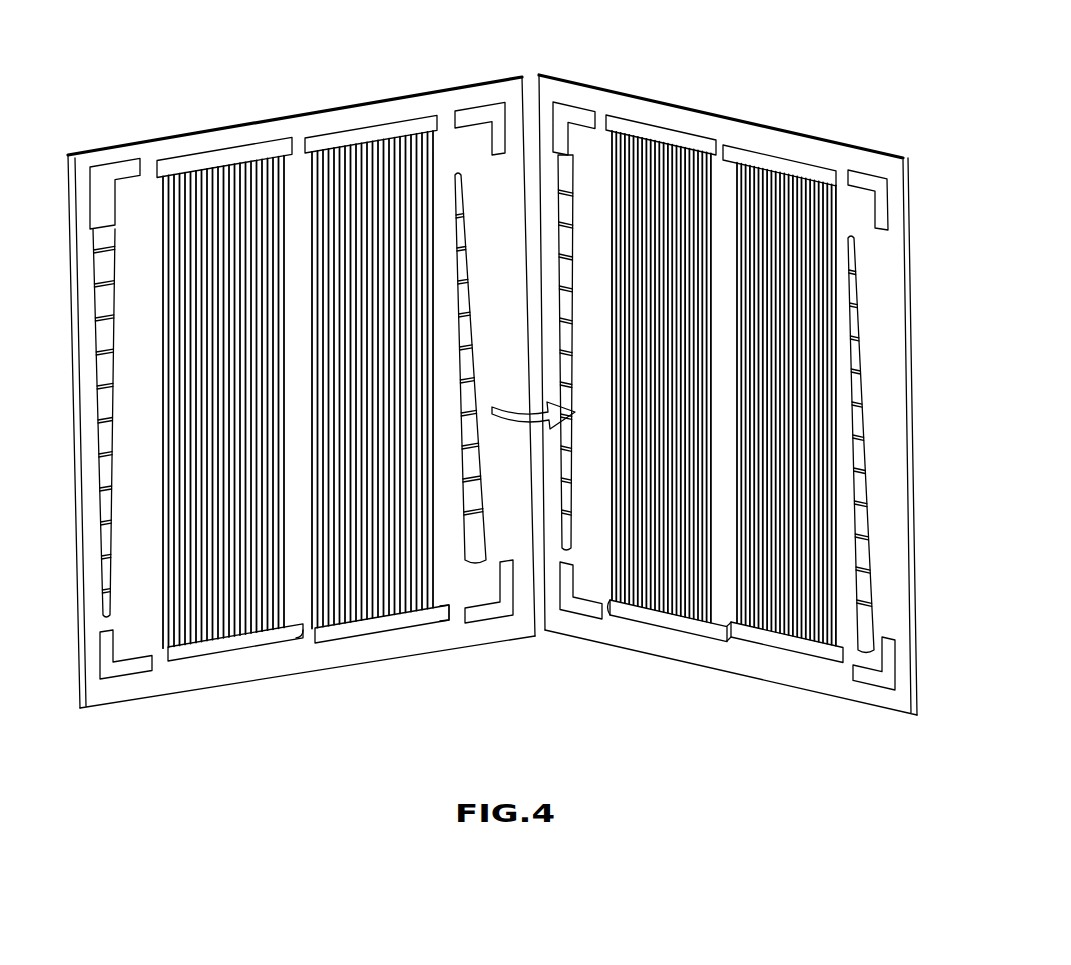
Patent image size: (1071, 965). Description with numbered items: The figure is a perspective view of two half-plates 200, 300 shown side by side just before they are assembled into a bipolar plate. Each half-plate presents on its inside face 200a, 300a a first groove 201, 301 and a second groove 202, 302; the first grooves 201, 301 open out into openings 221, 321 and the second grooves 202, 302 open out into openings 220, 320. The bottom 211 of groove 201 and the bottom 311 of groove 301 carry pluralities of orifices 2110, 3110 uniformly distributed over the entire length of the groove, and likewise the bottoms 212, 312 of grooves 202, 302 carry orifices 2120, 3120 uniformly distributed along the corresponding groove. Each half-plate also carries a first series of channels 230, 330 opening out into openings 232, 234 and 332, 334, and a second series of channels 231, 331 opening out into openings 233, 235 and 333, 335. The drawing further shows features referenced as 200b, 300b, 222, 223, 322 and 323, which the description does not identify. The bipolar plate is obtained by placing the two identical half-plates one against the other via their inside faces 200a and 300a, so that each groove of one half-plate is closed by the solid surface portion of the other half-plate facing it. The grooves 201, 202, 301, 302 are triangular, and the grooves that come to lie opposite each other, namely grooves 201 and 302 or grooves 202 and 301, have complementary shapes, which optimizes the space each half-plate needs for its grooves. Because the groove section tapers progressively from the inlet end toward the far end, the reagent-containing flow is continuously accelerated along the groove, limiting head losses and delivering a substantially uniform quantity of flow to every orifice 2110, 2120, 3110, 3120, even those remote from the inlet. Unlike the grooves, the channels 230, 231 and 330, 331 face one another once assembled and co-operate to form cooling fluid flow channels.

The half-plate 200 is at (270, 110).
The inside face 200a is at (510, 78).
The second side edge of first plate 200b is at (150, 135).
The first groove 201 is at (478, 362).
The second groove 202 is at (115, 518).
The groove bottom 211 is at (482, 514).
The groove bottom 212 is at (107, 300).
The orifices 2110 is at (478, 478).
The orifices 2120 is at (110, 447).
The opening 220 is at (122, 178).
The opening 221 is at (488, 612).
The upper right L-shaped aperture 222 is at (480, 115).
The lower left L-shaped aperture 223 is at (128, 675).
The first series of channels 230 is at (458, 608).
The second series of channels 231 is at (305, 648).
The opening 232 is at (368, 633).
The opening 233 is at (242, 652).
The opening 234 is at (365, 132).
The opening 235 is at (228, 157).
The half-plate 300 is at (730, 122).
The inside face 300a is at (560, 92).
The second side edge of second plate 300b is at (912, 158).
The first groove 301 is at (862, 385).
The second groove 302 is at (562, 268).
The groove bottom 311 is at (862, 555).
The groove bottom 312 is at (565, 298).
The orifices 3110 is at (865, 503).
The orifices 3120 is at (570, 382).
The opening 320 is at (583, 118).
The opening 321 is at (883, 678).
The upper right L-shaped aperture 322 is at (862, 178).
The lower left L-shaped aperture 323 is at (572, 608).
The first series of channels 330 is at (755, 640).
The second series of channels 331 is at (624, 606).
The opening 332 is at (800, 665).
The opening 333 is at (690, 632).
The opening 334 is at (790, 158).
The opening 335 is at (660, 128).